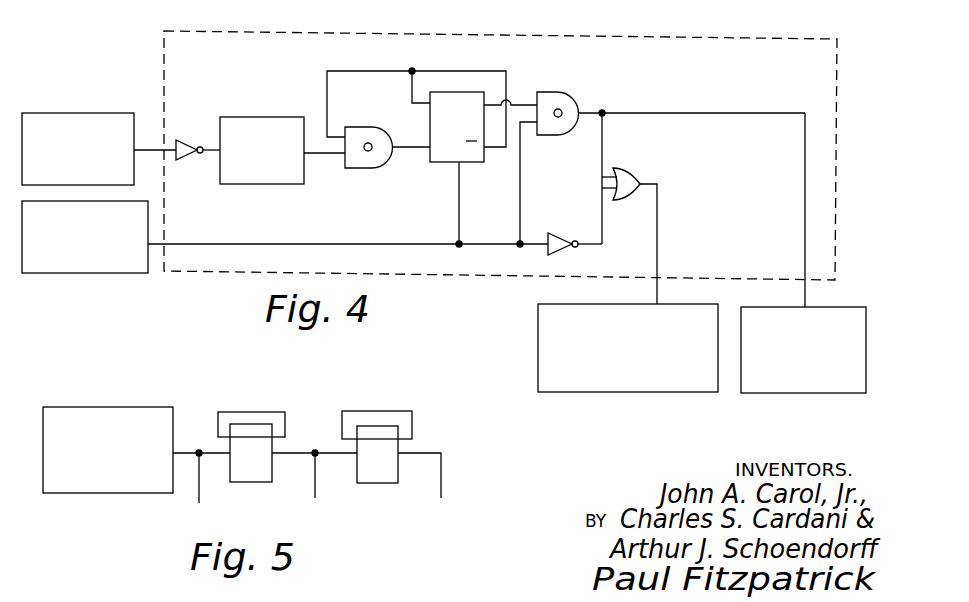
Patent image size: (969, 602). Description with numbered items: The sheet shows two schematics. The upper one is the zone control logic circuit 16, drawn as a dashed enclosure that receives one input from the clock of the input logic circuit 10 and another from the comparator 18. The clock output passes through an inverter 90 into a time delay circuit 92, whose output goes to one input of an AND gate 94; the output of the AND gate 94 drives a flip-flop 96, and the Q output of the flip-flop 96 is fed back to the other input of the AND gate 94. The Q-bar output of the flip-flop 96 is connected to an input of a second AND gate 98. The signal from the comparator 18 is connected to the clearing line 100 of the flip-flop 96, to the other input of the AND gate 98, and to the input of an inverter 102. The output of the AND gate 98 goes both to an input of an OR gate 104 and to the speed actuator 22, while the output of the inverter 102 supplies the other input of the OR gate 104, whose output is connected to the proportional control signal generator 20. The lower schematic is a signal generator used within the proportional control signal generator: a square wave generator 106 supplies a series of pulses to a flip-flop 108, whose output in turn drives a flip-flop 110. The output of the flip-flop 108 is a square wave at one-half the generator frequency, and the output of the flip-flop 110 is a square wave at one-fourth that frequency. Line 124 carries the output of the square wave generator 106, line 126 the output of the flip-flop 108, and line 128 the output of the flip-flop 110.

In FIG. 4, the input logic circuit 10 is at (125, 122).
In FIG. 4, the zone control logic circuit 16 is at (198, 46).
In FIG. 4, the comparator 18 is at (78, 263).
In FIG. 4, the proportional control signal generator 20 is at (538, 348).
In FIG. 4, the speed actuator 22 is at (758, 312).
In FIG. 4, the inverter 90 is at (183, 144).
In FIG. 4, the time delay circuit 92 is at (298, 117).
In FIG. 4, the AND gate 94 is at (360, 169).
In FIG. 4, the flip-flop 96 is at (455, 92).
In FIG. 4, the AND gate 98 is at (568, 95).
In FIG. 4, the clearing line 100 is at (459, 193).
In FIG. 4, the inverter 102 is at (548, 253).
In FIG. 4, the OR gate 104 is at (635, 170).
In FIG. 5, the square wave generator 106 is at (100, 487).
In FIG. 5, the flip-flop 108 is at (247, 424).
In FIG. 5, the flip-flop 110 is at (383, 425).
In FIG. 5, the line 124 is at (200, 496).
In FIG. 5, the line 126 is at (316, 490).
In FIG. 5, the line 128 is at (438, 490).